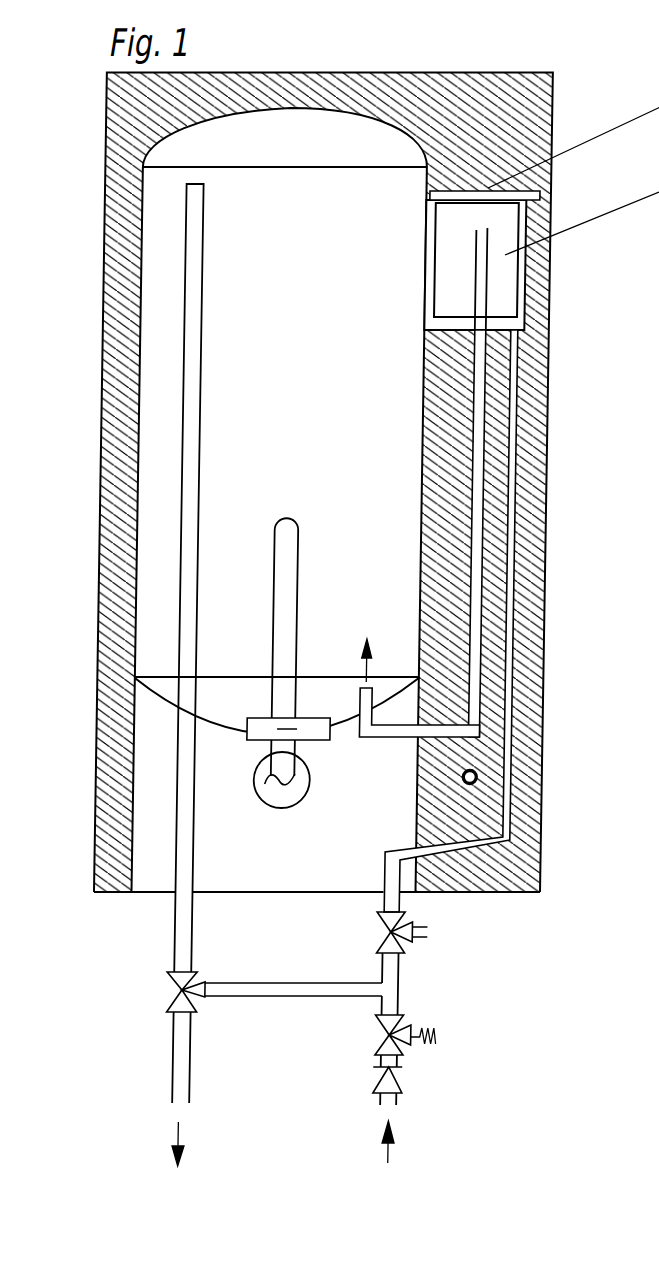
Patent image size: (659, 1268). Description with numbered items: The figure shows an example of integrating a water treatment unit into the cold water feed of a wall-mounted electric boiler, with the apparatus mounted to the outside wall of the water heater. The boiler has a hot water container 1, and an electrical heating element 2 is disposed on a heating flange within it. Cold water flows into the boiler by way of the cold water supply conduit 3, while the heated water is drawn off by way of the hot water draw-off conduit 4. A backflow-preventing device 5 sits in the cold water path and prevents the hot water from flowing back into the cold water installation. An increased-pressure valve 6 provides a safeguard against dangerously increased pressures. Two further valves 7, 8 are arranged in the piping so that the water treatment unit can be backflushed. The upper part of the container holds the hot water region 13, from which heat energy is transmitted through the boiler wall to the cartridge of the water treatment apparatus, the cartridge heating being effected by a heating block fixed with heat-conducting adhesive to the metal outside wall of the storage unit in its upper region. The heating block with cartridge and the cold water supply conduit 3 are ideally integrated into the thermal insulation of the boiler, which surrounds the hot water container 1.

The hot water container 1 is at (156, 348).
The heating element 2 is at (280, 643).
The cold water supply conduit 3 is at (385, 1163).
The hot water draw-off conduit 4 is at (179, 1167).
The backflow-preventing device 5 is at (420, 1093).
The increased-pressure valve 6 is at (438, 1045).
The valve 7 is at (413, 935).
The valve 8 is at (170, 988).
The hot water region 13 is at (406, 362).